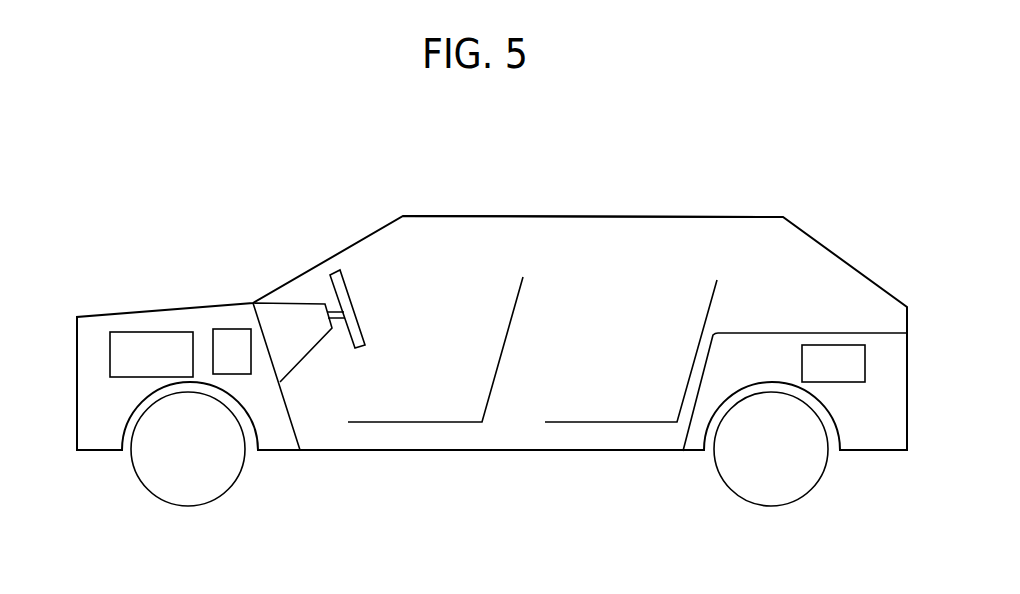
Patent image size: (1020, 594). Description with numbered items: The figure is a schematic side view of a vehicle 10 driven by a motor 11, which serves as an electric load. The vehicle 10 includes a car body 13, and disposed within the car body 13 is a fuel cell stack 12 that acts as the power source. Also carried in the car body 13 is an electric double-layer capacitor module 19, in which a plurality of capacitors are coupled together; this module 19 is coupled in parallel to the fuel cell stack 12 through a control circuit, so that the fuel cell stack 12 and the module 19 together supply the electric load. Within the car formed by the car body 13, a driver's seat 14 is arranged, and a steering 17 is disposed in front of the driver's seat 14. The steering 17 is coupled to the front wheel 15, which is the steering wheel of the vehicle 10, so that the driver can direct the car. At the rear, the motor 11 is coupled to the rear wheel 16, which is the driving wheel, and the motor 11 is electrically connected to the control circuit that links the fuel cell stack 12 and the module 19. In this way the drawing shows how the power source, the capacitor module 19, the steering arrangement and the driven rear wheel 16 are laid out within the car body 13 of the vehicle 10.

The vehicle 10 is at (583, 202).
The motor 11 is at (840, 382).
The fuel cell stack 12 is at (130, 332).
The car body 13 is at (692, 215).
The driver's seat 14 is at (425, 422).
The front wheel 15 is at (218, 475).
The rear wheel 16 is at (773, 488).
The steering 17 is at (343, 277).
The electric double-layer capacitor module 19 is at (233, 328).